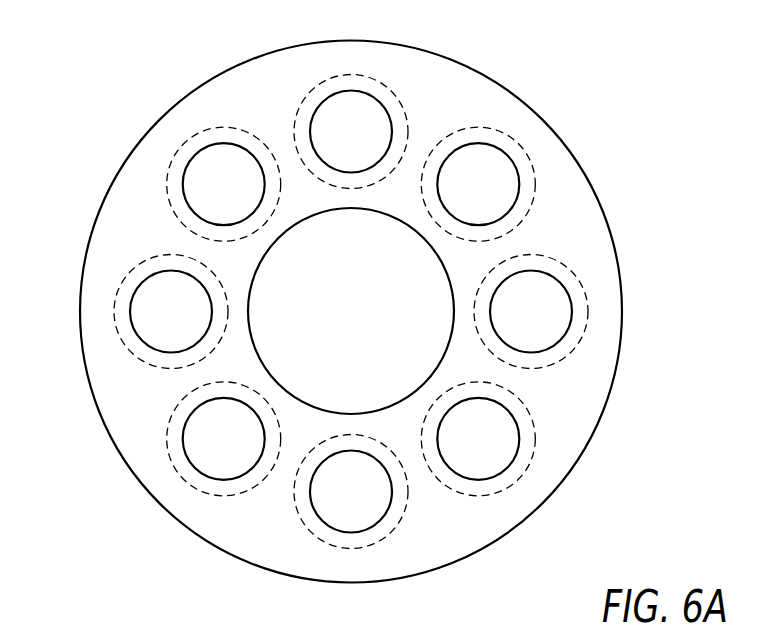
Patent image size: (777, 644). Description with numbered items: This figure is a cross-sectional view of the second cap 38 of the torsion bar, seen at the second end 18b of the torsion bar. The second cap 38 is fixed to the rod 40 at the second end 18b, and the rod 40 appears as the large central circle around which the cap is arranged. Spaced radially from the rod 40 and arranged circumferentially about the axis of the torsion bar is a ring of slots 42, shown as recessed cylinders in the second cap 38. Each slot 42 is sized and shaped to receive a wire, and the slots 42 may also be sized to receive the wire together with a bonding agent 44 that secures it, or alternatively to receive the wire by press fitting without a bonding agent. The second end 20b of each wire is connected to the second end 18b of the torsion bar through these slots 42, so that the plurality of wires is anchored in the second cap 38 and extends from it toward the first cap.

The second end of the torsion bar 18b is at (152, 88).
The second cap 38 is at (137, 143).
The rod 40 is at (307, 322).
The slots 42 is at (365, 75).
The bonding agent 44 is at (386, 93).
The second end of the wire 20b is at (392, 125).